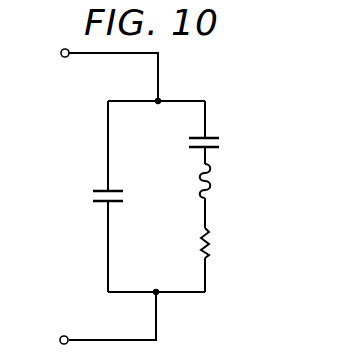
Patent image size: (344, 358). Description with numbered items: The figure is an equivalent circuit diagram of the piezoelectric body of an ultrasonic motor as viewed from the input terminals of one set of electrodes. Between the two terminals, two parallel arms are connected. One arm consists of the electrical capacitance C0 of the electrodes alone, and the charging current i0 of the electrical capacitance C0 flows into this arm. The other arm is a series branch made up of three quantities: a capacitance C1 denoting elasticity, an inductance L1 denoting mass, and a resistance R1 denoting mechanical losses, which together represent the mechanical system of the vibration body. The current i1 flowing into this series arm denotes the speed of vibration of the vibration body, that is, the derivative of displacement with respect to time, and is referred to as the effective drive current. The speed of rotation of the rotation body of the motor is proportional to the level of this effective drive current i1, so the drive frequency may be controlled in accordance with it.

The electrical capacitance of the electrodes C0 is at (120, 201).
The elasticity C1 is at (215, 145).
The mass L1 is at (216, 183).
The mechanical losses R1 is at (217, 244).
The charging current i0 is at (80, 92).
The speed of vibration i1 is at (220, 87).